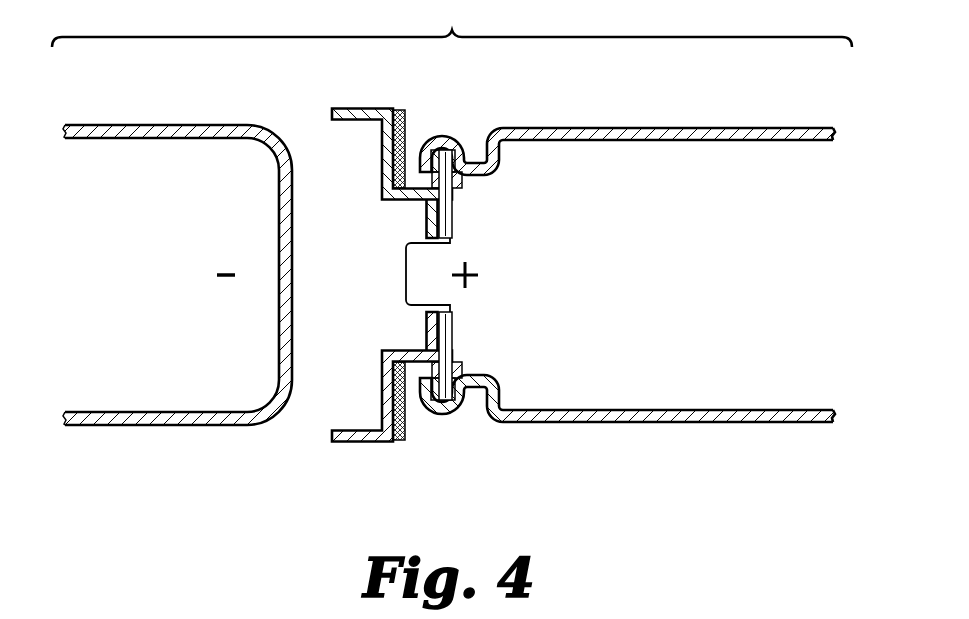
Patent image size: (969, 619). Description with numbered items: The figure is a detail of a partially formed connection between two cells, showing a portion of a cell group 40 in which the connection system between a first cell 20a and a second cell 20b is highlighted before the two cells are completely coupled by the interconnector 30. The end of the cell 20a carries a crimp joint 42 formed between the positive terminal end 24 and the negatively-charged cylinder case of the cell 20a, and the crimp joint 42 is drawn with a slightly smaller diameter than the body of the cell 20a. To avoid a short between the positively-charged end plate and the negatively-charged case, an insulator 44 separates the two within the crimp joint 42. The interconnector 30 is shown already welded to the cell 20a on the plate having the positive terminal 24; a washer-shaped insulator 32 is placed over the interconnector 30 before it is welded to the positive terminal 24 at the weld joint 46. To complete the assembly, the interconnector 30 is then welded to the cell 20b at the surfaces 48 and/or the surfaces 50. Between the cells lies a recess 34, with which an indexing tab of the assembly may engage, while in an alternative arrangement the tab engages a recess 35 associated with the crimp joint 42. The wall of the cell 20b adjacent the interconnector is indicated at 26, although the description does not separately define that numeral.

The cell group 40 is at (452, 27).
The cell 20a is at (670, 426).
The cell 20b is at (153, 426).
The positive terminal end 24 is at (404, 276).
The panel wall 26 is at (291, 334).
The interconnector 30 is at (347, 443).
The insulator 32 is at (400, 108).
The recess 34 is at (413, 152).
The recess 35 is at (479, 158).
The crimp joint 42 is at (441, 136).
The insulator 44 is at (457, 173).
The weld joint 46 is at (452, 217).
The surface 48 is at (383, 176).
The surface 50 is at (373, 430).